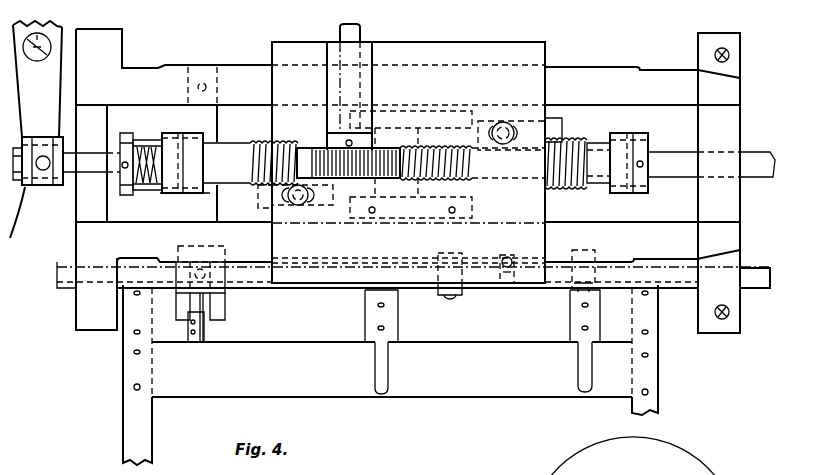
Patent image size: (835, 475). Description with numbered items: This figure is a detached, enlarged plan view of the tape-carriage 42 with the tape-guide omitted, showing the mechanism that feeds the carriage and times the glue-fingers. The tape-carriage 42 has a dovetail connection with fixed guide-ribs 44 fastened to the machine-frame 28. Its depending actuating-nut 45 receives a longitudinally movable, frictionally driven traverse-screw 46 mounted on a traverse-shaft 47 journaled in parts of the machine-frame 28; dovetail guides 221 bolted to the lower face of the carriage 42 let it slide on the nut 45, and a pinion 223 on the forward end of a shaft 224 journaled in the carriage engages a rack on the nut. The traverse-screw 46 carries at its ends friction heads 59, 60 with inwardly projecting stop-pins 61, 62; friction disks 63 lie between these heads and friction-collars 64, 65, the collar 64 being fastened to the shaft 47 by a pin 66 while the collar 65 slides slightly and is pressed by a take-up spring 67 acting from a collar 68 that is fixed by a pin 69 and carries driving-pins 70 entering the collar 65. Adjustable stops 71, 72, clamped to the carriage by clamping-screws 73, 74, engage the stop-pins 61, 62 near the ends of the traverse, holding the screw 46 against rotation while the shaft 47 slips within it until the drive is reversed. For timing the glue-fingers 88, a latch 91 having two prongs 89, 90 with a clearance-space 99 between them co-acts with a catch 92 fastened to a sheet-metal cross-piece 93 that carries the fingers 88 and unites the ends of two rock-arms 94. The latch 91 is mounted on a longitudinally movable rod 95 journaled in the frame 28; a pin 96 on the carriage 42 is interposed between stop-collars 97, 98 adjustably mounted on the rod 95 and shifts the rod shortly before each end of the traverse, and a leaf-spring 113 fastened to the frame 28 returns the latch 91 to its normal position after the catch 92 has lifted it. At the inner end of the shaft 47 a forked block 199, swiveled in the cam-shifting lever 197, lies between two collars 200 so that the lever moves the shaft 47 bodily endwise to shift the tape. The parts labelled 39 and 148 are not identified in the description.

The machine-frame 28 is at (735, 201).
The wheel 39 is at (643, 456).
The tape-carriage 42 is at (470, 46).
The guide-ribs 44 is at (598, 73).
The actuating-nut 45 is at (446, 184).
The traverse-screw 46 is at (244, 185).
The traverse-shaft 47 is at (68, 180).
The friction head 59 is at (613, 135).
The friction head 60 is at (200, 141).
The stop-pin 61 is at (604, 136).
The stop-pin 62 is at (186, 195).
The friction disks 63 is at (186, 196).
The friction-collar 64 is at (639, 136).
The friction-collar 65 is at (167, 133).
The pin 66 is at (642, 162).
The take-up spring 67 is at (128, 195).
The collar 68 is at (125, 133).
The pin 69 is at (123, 168).
The driving-pins 70 is at (143, 140).
The stop 71 is at (555, 118).
The stop 72 is at (267, 209).
The clamping-screw 73 is at (505, 121).
The clamping-screw 74 is at (300, 206).
The glue-fingers 88 is at (389, 365).
The prong 89 is at (218, 302).
The prong 90 is at (182, 308).
The latch 91 is at (215, 275).
The catch 92 is at (193, 340).
The cross-piece 93 is at (330, 328).
The rock-arms 94 is at (127, 436).
The rod 95 is at (62, 275).
The pin 96 is at (504, 283).
The stop-collar 97 is at (458, 294).
The stop-collar 98 is at (574, 290).
The clearance-space 99 is at (206, 320).
The leaf-spring 113 is at (185, 200).
The screw 148 is at (50, 37).
The cam-shifting lever 197 is at (37, 79).
The forked block 199 is at (38, 190).
The collars 200 is at (19, 225).
The dovetail guides 221 is at (432, 111).
The pinion 223 is at (320, 148).
The shaft 224 is at (356, 34).